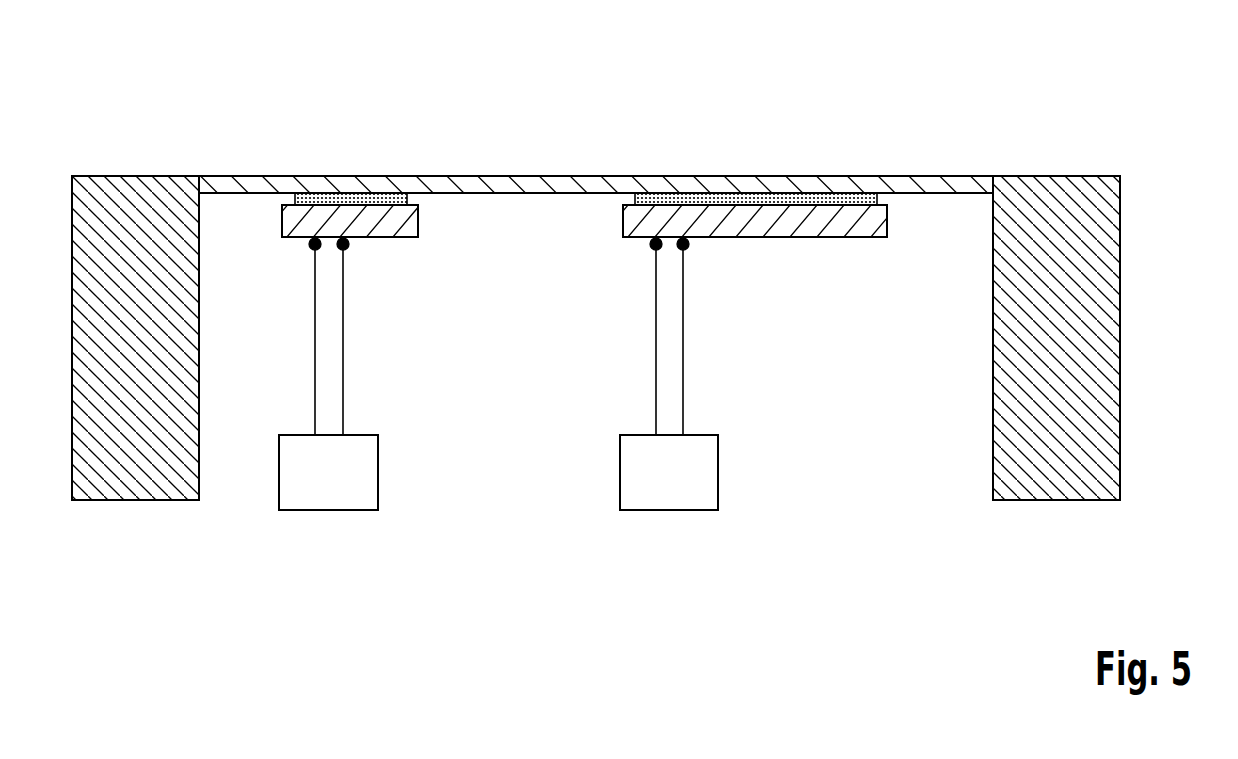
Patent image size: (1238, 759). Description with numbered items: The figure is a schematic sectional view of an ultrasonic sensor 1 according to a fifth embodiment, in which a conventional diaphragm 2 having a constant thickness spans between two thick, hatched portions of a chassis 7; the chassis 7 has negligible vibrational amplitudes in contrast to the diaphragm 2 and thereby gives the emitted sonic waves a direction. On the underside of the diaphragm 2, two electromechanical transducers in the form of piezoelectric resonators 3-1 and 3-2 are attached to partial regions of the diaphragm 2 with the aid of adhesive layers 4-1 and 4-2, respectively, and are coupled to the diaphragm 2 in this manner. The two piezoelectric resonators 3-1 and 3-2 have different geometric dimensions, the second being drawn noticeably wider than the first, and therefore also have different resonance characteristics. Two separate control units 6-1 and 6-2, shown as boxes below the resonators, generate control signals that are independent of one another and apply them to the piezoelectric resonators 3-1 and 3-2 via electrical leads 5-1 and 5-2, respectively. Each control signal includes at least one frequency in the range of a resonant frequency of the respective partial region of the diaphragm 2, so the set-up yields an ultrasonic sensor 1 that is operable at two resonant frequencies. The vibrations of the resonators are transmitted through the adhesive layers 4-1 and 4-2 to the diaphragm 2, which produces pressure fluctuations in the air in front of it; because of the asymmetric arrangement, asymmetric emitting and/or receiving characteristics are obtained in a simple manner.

The ultrasonic sensor 1 is at (270, 138).
The diaphragm 2 is at (678, 133).
The piezoelectric resonator 3-1 is at (499, 211).
The piezoelectric resonator 3-2 is at (963, 213).
The adhesive layer 4-1 is at (297, 198).
The adhesive layer 4-2 is at (637, 198).
The electrical leads 5-1 is at (315, 358).
The electrical leads 5-2 is at (656, 357).
The control unit 6-1 is at (448, 465).
The control unit 6-2 is at (798, 465).
The chassis 7 is at (199, 332).